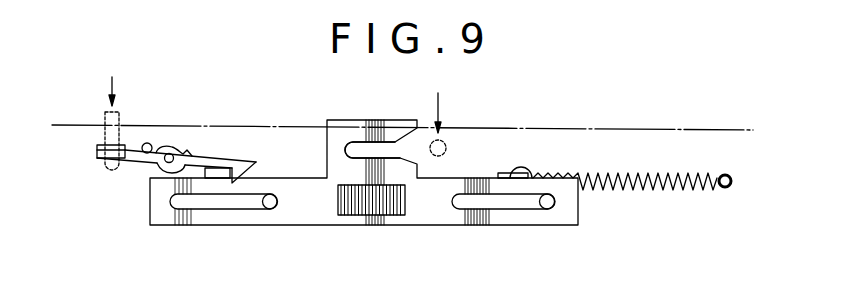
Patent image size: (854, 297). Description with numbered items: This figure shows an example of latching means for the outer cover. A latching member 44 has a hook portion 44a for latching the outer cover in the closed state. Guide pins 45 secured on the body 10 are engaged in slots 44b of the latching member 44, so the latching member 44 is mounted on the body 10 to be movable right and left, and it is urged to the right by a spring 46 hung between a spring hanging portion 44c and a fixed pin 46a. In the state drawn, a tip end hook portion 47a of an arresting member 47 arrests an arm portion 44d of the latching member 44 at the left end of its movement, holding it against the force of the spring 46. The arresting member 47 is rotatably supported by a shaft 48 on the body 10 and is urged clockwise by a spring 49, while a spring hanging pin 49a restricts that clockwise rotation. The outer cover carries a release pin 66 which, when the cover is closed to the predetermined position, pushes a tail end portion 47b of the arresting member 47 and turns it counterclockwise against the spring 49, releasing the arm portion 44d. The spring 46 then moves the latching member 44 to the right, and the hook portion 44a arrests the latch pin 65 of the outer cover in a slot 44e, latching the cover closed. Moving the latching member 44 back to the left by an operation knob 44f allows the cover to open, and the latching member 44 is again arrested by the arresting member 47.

The body 10 is at (632, 128).
The latching member 44 is at (308, 216).
The hook portion 44a is at (360, 123).
The slots 44b is at (227, 208).
The spring hanging portion 44c is at (512, 183).
The arm portion 44d is at (213, 179).
The slot 44e is at (385, 148).
The operation knob 44f is at (367, 207).
The guide pins 45 is at (275, 208).
The spring 46 is at (605, 190).
The fixed pin 46a is at (717, 190).
The arresting member 47 is at (200, 160).
The tip end hook portion 47a is at (243, 177).
The tail end portion 47b is at (100, 160).
The shaft 48 is at (171, 152).
The spring 49 is at (158, 165).
The spring hanging pin 49a is at (143, 143).
The latch pin 65 is at (445, 140).
The release pin 66 is at (100, 113).